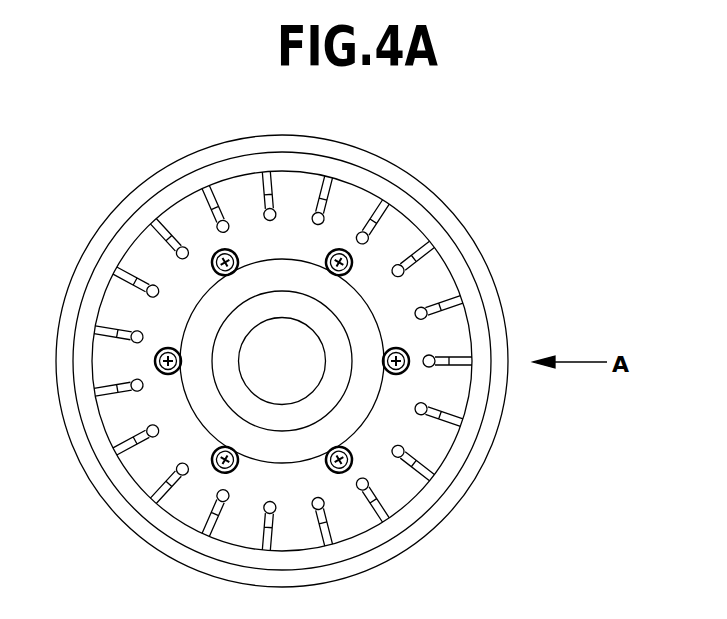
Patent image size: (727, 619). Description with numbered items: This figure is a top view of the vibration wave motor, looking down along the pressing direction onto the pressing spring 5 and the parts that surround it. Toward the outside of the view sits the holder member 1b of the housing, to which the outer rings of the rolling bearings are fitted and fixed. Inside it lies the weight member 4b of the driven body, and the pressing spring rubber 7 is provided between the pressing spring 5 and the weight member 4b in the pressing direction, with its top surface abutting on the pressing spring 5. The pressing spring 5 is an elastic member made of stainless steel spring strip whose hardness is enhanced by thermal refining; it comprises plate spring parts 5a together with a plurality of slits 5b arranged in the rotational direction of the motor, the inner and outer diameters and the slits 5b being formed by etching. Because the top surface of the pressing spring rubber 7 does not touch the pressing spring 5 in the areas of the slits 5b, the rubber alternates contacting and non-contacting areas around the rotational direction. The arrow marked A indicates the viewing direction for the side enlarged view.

The holder member 1b is at (407, 182).
The weight member 4b is at (435, 230).
The pressing spring rubber 7 is at (455, 284).
The pressing spring 5 is at (351, 361).
The plate spring parts 5a is at (443, 442).
The slits 5b is at (437, 465).